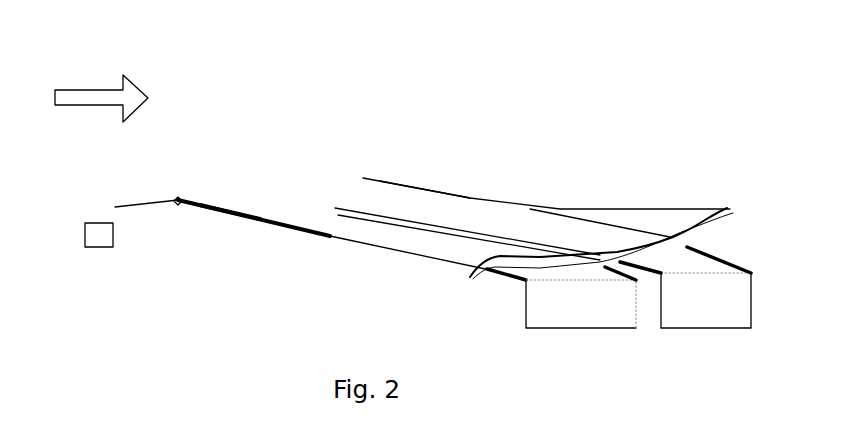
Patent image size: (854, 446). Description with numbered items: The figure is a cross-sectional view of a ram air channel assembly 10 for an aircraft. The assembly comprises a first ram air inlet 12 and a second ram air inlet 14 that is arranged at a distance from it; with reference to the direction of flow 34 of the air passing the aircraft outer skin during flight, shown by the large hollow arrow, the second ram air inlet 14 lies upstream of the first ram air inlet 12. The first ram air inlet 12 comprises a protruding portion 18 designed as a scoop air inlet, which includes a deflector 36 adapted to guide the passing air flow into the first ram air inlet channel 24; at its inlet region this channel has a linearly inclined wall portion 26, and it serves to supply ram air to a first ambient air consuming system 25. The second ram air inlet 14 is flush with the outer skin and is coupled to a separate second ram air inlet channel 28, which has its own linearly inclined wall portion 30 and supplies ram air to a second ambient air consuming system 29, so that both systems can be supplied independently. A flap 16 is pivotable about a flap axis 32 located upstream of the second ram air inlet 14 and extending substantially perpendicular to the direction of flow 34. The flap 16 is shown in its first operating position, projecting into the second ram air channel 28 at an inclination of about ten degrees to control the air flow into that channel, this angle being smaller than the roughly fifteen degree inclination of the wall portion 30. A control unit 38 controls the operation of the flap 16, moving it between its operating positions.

The ram air channel assembly 10 is at (408, 66).
The first ram air inlet 12 is at (358, 178).
The second ram air inlet 14 is at (268, 188).
The flap 16 is at (233, 210).
The protruding portion 18 is at (490, 178).
The first ram air inlet channel 24 is at (567, 233).
The first ambient air consuming system 25 is at (698, 307).
The linearly inclined wall portion 26 is at (393, 213).
The second ram air inlet channel 28 is at (423, 242).
The second ambient air consuming system 29 is at (562, 315).
The linearly inclined wall portion 30 is at (260, 228).
The flap axis 32 is at (177, 212).
The direction of flow 34 is at (97, 88).
The deflector 36 is at (404, 181).
The control unit 38 is at (94, 240).